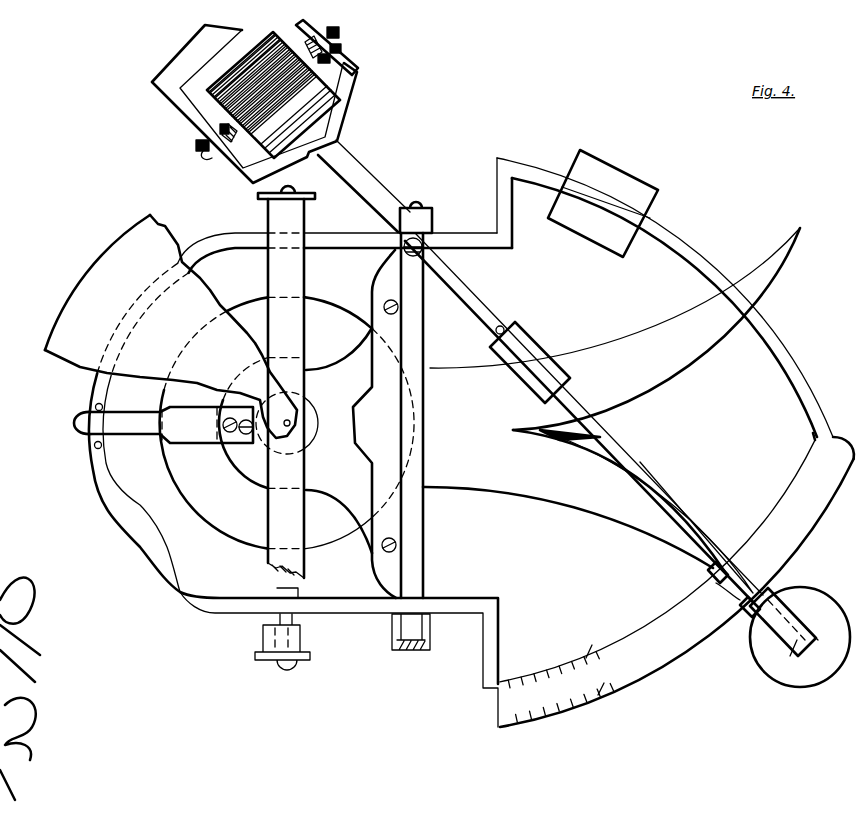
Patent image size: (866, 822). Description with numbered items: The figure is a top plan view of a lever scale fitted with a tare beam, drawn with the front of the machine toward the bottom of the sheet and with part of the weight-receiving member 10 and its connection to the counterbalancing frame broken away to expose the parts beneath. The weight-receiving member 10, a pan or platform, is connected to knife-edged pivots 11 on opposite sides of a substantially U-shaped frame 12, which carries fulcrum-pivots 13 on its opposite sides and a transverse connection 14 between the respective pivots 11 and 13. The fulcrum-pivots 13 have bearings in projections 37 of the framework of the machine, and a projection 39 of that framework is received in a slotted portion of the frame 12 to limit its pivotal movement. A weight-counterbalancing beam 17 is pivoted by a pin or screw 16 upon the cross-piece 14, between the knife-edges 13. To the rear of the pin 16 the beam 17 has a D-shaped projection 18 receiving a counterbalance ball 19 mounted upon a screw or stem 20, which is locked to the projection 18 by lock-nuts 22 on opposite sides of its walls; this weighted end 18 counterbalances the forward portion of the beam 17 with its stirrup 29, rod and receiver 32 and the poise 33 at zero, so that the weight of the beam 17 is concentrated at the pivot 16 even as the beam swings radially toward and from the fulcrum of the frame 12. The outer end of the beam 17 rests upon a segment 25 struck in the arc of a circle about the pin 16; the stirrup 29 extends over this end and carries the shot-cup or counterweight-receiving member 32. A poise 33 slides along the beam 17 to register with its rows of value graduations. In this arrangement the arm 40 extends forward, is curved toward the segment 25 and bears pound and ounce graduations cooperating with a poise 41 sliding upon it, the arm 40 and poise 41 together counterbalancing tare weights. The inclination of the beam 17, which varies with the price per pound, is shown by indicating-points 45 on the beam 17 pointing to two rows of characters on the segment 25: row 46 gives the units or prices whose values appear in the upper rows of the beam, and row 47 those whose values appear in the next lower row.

The weight-receiving member 10 is at (171, 326).
The knife-edged pivots 11 is at (285, 623).
The frame 12 is at (333, 240).
The fulcrum-pivots 13 is at (407, 632).
The transverse connection 14 is at (420, 433).
The pin or screw 16 is at (425, 243).
The weight-counterbalancing member or beam 17 is at (483, 312).
The D-shaped projection 18 is at (358, 84).
The counterbalance weight or ball 19 is at (273, 95).
The screw or stem 20 is at (340, 33).
The lock-nuts 22 is at (338, 45).
The segment 25 is at (787, 559).
The stirrup 29 is at (816, 634).
The shot-cup or counterweight receiving member 32 is at (800, 637).
The poise 33 is at (530, 362).
The projections of the framework 37 is at (432, 225).
The projection of the framework 39 is at (74, 432).
The curved arm 40 is at (532, 170).
The poise 41 is at (603, 203).
The projections or indicating-points 45 is at (710, 580).
The row of characters 46 is at (587, 653).
The row of characters 47 is at (600, 700).